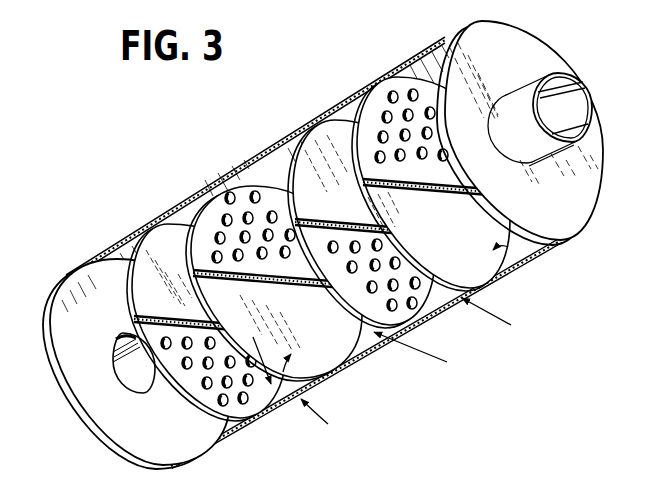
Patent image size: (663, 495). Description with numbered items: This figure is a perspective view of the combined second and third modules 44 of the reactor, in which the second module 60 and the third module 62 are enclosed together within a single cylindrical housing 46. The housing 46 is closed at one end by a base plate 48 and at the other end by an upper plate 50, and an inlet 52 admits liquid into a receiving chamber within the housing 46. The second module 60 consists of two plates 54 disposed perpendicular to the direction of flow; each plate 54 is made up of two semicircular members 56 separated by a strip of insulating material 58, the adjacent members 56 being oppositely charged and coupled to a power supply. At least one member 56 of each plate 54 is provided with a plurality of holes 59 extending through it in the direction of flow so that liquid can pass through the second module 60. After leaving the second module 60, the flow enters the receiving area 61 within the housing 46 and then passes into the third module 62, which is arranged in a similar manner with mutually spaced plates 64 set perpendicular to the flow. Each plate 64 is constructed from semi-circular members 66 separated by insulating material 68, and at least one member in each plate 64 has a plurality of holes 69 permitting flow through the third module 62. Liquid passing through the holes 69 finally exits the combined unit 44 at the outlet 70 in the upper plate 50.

The combined second and third modules 44 is at (328, 245).
The cylindrical housing 46 is at (314, 253).
The base plate 48 is at (130, 364).
The upper plate 50 is at (531, 133).
The inlet 52 is at (70, 412).
The plates 54 is at (366, 352).
The semicircular members 56 is at (227, 307).
The insulating material 58 is at (178, 315).
The holes 59 is at (250, 370).
The second module 60 is at (404, 343).
The receiving area 61 is at (423, 353).
The third module 62 is at (498, 318).
The plates 64 is at (432, 105).
The semi-circular members 66 is at (273, 284).
The insulating material 68 is at (358, 221).
The holes 69 is at (412, 264).
The outlet 70 is at (592, 121).